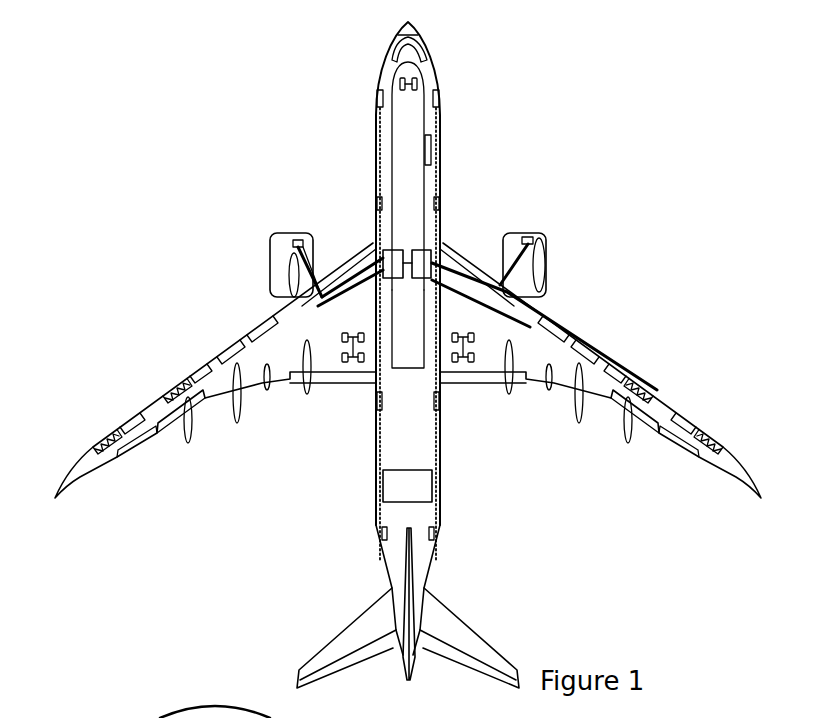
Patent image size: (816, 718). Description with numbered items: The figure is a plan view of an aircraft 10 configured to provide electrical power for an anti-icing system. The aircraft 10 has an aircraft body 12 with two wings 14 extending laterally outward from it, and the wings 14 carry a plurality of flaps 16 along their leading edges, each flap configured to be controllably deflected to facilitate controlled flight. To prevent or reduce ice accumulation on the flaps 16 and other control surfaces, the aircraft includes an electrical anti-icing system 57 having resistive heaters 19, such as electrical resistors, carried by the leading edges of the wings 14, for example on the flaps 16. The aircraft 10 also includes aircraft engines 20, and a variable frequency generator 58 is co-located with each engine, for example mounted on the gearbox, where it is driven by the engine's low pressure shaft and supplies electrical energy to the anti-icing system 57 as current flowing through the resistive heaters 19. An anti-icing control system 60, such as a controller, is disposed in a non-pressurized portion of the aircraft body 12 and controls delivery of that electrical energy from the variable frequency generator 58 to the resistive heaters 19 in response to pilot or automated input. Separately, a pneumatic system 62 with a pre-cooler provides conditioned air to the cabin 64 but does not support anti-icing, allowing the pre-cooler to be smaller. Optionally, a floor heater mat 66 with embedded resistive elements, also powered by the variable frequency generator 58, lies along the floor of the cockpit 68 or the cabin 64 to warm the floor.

The aircraft 10 is at (479, 94).
The aircraft body 12 is at (442, 178).
The wings 14 is at (95, 460).
The flaps 16 is at (215, 352).
The resistive heaters 19 is at (219, 345).
The aircraft engines 20 is at (275, 258).
The anti-icing system 57 is at (591, 329).
The variable frequency generator 58 is at (295, 240).
The anti-icing control system 60 is at (384, 251).
The pneumatic system 62 is at (414, 487).
The cabin 64 is at (421, 342).
The floor heater mat 66 is at (421, 146).
The cockpit 68 is at (412, 36).